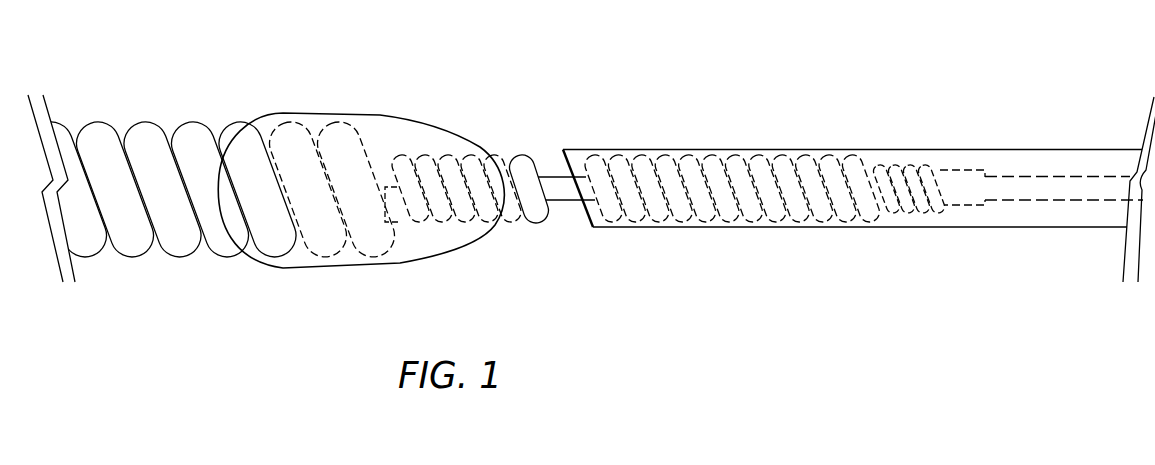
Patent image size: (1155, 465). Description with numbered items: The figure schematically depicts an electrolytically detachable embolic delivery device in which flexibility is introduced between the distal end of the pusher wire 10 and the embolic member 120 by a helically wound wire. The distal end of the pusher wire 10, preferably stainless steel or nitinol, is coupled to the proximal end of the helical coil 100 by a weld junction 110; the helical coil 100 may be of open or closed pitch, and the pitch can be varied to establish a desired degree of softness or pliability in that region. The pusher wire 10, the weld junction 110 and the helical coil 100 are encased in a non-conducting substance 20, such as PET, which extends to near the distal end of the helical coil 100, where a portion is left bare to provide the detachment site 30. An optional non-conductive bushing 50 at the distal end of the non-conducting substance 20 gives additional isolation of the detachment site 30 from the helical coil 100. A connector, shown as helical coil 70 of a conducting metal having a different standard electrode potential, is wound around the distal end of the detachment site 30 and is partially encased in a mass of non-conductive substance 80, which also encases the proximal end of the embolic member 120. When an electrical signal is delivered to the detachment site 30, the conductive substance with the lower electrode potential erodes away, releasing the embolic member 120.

The pusher wire 10 is at (1062, 178).
The non-conducting substance 20 is at (900, 152).
The detachment site 30 is at (552, 181).
The non-conductive bushing 50 is at (577, 153).
The helical coil 70 is at (517, 217).
The non-conductive substance 80 is at (393, 158).
The helical coil 100 is at (783, 164).
The weld junction 110 is at (972, 184).
The embolic member 120 is at (185, 233).